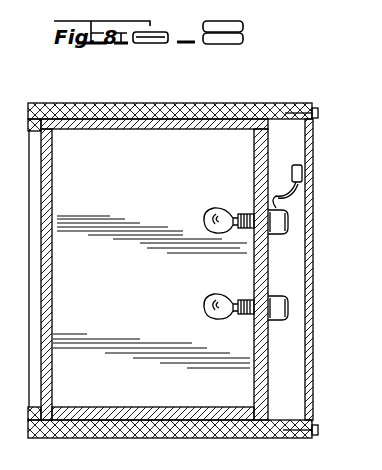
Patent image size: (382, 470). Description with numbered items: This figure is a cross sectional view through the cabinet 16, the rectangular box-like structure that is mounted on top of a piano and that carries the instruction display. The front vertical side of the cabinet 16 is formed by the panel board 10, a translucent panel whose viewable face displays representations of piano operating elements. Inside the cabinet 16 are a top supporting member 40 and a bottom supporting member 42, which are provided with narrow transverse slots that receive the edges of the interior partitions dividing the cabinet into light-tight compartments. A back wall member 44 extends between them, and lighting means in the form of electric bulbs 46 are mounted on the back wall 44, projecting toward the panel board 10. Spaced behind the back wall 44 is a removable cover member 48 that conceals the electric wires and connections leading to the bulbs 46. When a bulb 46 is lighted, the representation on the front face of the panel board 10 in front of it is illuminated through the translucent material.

The cabinet 16 is at (90, 112).
The top supporting member 40 is at (70, 132).
The panel board 10 is at (52, 262).
The bottom supporting member 42 is at (77, 412).
The back wall member 44 is at (258, 258).
The electric bulb 46 is at (210, 222).
The removable cover member 48 is at (312, 260).